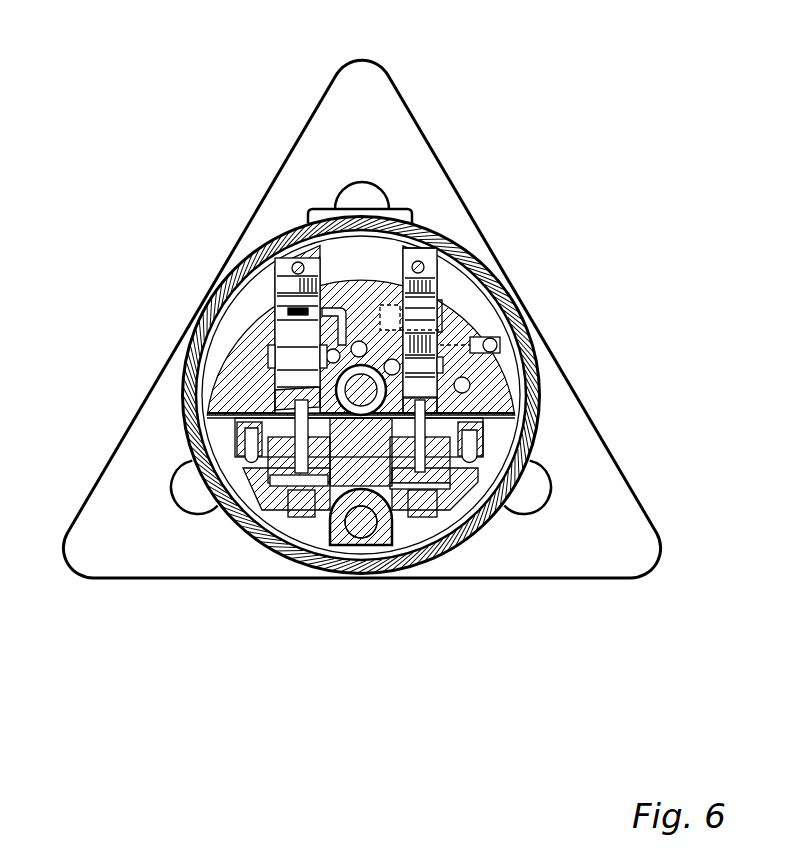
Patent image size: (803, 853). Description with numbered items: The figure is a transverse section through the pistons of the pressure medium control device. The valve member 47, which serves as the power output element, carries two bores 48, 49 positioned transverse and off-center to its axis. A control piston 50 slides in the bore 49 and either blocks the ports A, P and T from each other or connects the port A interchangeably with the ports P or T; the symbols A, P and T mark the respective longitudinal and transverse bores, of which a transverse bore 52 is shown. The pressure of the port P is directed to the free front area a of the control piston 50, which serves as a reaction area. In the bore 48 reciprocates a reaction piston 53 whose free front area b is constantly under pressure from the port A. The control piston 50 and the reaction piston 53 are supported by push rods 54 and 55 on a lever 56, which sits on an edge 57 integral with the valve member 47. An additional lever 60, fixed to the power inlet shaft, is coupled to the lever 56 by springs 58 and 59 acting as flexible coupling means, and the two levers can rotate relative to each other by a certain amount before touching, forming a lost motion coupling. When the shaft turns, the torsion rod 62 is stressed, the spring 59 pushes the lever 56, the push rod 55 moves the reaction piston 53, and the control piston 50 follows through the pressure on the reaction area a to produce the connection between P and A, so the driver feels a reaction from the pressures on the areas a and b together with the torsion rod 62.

The valve member 47 is at (382, 262).
The bore 48 is at (276, 300).
The bore 49 is at (440, 294).
The control piston 50 is at (445, 320).
The transverse bore 52 is at (497, 340).
The reaction piston 53 is at (283, 393).
The push rod 54 is at (478, 463).
The push rod 55 is at (258, 470).
The lever 56 is at (395, 512).
The edge 57 is at (348, 512).
The spring 58 is at (278, 487).
The spring 59 is at (443, 470).
The lever 60 is at (323, 492).
The torsion rod 62 is at (487, 415).
The port P is at (352, 340).
The port T is at (470, 384).
The port A is at (445, 358).
The free front area a is at (440, 280).
The free front area b is at (274, 310).